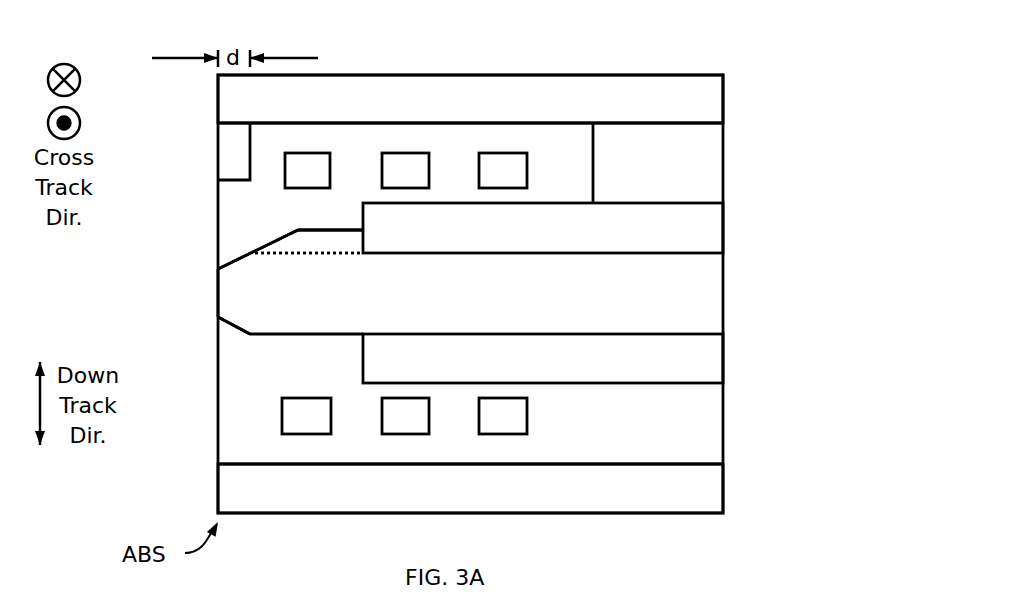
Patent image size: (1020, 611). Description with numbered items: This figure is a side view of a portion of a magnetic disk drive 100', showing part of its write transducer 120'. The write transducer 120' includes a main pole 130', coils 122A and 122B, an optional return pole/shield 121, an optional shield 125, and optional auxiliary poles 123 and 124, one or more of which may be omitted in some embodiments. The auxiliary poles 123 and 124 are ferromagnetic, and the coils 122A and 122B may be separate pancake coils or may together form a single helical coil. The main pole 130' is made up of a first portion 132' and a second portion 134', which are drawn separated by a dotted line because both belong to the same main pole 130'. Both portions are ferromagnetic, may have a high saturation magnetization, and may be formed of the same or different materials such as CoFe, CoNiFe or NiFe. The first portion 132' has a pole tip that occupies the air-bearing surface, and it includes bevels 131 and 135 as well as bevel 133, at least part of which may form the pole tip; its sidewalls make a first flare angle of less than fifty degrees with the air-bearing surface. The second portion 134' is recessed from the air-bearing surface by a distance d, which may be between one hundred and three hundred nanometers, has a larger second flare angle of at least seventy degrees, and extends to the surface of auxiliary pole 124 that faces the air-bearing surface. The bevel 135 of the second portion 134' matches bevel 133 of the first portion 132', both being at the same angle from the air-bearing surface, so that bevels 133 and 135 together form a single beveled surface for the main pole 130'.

The magnetic disk drive 100' is at (470, 271).
The write transducer 120' is at (532, 293).
The return pole/shield 121 is at (723, 489).
The coil 122A is at (254, 415).
The coil 122B is at (266, 163).
The auxiliary pole 123 is at (723, 347).
The auxiliary pole 124 is at (723, 234).
The shield 125 is at (723, 98).
The main pole 130' is at (304, 282).
The bevel 131 is at (236, 345).
The first portion 132' is at (175, 307).
The bevel 133 is at (228, 251).
The second portion 134' is at (248, 201).
The bevel 135 is at (268, 229).